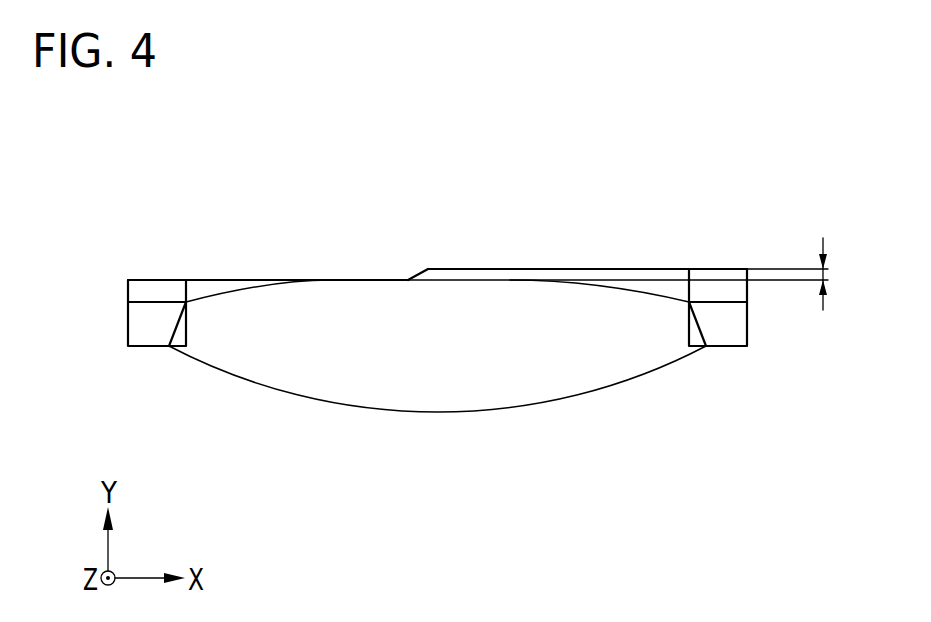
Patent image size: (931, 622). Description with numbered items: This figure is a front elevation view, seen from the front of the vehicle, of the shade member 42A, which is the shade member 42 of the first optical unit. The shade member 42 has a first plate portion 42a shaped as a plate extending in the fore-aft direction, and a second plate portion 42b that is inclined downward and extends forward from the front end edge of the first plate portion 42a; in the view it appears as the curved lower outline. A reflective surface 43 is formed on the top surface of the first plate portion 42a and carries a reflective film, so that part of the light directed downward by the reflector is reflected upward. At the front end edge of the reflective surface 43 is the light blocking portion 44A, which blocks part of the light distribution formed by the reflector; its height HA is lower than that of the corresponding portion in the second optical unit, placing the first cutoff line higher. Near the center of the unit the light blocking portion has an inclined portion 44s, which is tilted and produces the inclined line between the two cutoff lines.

The shade member 42 is at (465, 311).
The shade member of the first optical unit 42A is at (476, 205).
The first plate portion 42a is at (144, 279).
The second plate portion 42b is at (242, 381).
The reflective surface 43 is at (288, 279).
The inclined portion 44s is at (410, 279).
The light blocking portion of the first optical unit 44A is at (607, 268).
The height of the light blocking portion HA is at (841, 274).